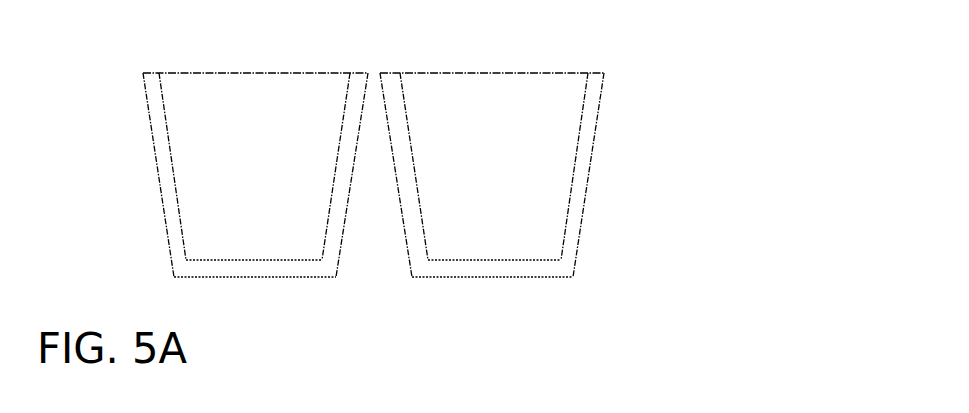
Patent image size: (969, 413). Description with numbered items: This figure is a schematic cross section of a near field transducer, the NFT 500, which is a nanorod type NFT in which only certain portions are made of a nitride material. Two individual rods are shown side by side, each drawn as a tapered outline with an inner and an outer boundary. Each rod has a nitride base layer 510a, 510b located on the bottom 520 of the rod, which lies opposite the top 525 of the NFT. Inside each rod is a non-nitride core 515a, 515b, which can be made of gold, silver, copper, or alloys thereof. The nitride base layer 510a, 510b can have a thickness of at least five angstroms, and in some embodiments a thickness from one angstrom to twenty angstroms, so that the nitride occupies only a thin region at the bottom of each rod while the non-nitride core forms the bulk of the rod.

The NFT 500 is at (692, 120).
The nitride base layer 510a is at (173, 220).
The nitride base layer 510b is at (575, 193).
The non-nitride core 515a is at (252, 143).
The non-nitride core 515b is at (494, 145).
The bottom 520 is at (380, 301).
The top 525 is at (368, 52).